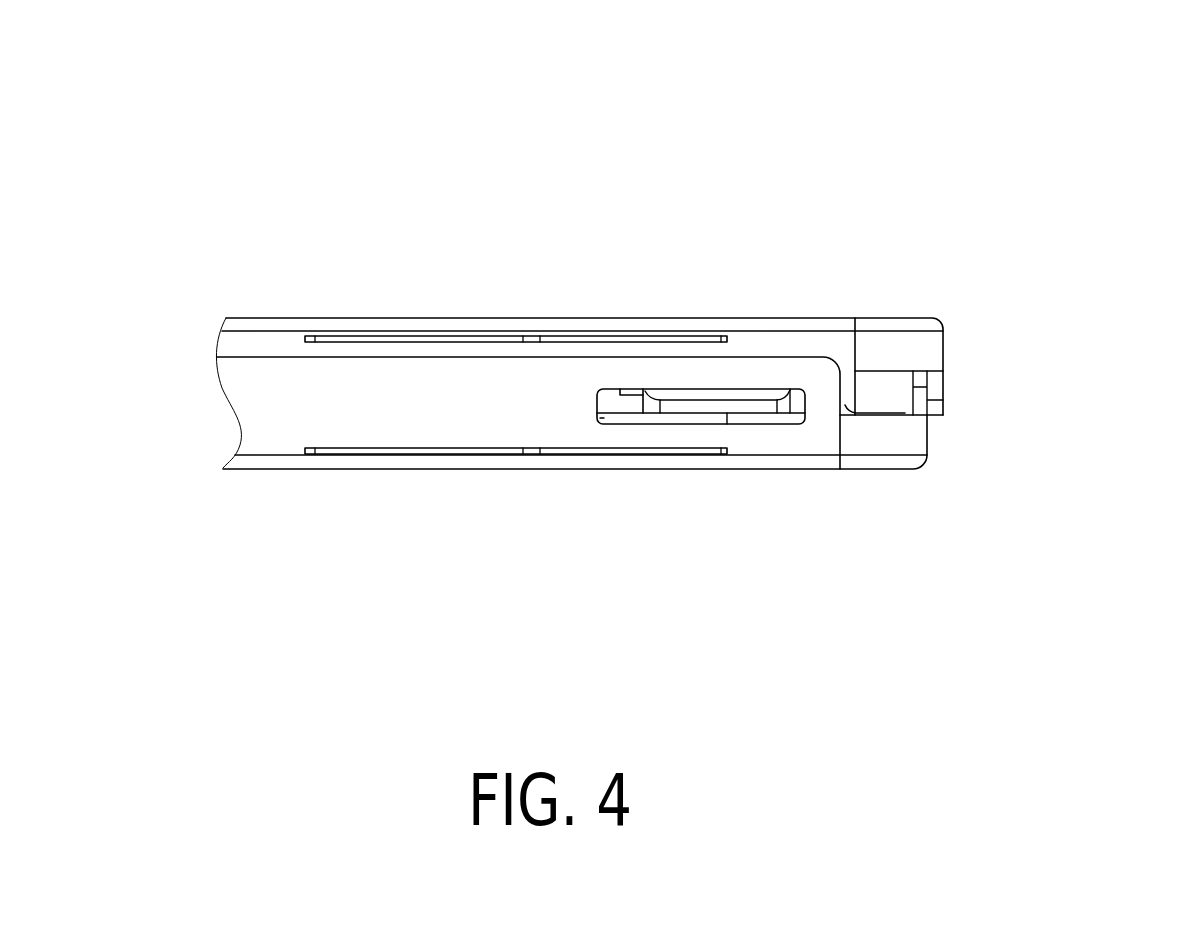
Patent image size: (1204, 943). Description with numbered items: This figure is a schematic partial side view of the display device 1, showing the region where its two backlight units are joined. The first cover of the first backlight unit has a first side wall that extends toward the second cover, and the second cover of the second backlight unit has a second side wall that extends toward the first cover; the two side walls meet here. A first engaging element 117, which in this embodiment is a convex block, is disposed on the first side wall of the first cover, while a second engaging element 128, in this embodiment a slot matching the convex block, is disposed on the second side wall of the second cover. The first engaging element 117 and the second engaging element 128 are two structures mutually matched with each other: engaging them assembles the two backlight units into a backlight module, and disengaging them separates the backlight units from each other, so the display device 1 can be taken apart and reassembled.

The display device 1 is at (1163, 67).
The first engaging element 117 is at (690, 407).
The second engaging element 128 is at (632, 390).